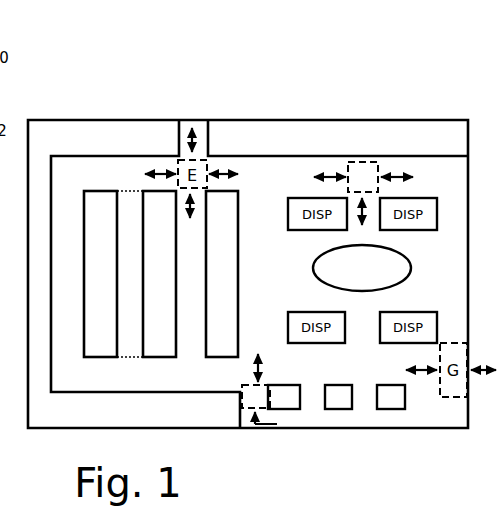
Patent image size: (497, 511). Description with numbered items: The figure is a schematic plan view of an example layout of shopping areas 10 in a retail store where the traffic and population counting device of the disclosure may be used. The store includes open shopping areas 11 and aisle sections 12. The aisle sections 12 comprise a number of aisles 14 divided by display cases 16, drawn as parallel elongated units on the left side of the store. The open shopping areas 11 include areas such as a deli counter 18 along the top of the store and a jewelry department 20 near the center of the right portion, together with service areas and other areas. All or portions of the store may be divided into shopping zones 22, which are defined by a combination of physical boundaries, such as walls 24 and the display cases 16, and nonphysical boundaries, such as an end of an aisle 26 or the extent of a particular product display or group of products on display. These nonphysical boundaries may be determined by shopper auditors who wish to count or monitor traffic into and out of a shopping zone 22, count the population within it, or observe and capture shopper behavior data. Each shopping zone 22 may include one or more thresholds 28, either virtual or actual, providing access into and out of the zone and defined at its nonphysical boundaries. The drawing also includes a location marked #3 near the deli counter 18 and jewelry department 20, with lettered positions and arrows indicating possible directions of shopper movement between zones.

The shopping areas 10 is at (349, 44).
The open shopping areas 11 is at (282, 104).
The aisle sections 12 is at (147, 104).
The aisles 14 is at (121, 331).
The display cases 16 is at (90, 311).
The deli counter 18 is at (303, 146).
The jewelry department 20 is at (407, 257).
The shopping zones 22 is at (119, 230).
The walls 24 is at (440, 427).
The end of an aisle 26 is at (128, 190).
The thresholds 28 is at (118, 190).
The location # 3 is at (393, 178).